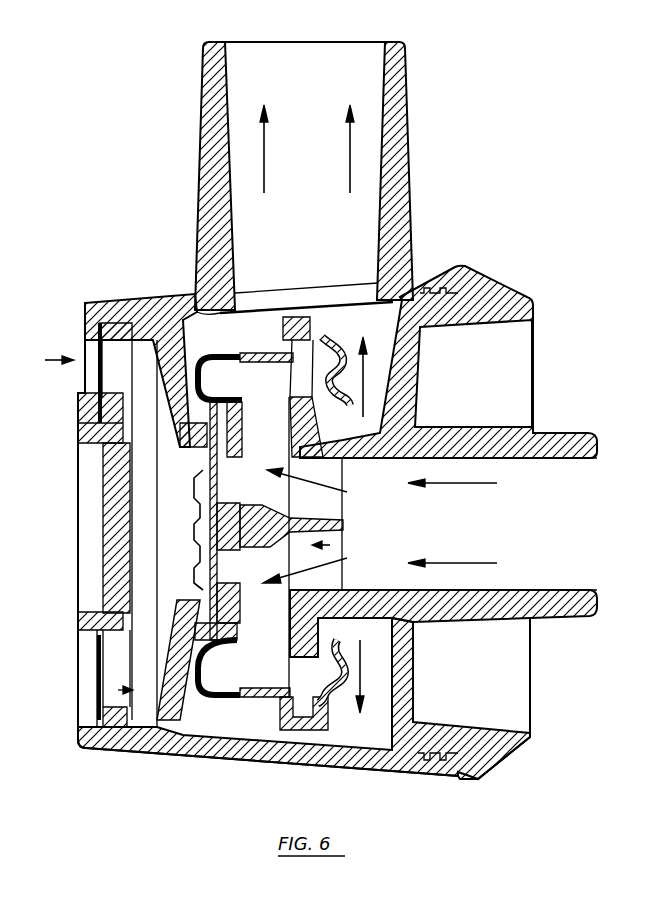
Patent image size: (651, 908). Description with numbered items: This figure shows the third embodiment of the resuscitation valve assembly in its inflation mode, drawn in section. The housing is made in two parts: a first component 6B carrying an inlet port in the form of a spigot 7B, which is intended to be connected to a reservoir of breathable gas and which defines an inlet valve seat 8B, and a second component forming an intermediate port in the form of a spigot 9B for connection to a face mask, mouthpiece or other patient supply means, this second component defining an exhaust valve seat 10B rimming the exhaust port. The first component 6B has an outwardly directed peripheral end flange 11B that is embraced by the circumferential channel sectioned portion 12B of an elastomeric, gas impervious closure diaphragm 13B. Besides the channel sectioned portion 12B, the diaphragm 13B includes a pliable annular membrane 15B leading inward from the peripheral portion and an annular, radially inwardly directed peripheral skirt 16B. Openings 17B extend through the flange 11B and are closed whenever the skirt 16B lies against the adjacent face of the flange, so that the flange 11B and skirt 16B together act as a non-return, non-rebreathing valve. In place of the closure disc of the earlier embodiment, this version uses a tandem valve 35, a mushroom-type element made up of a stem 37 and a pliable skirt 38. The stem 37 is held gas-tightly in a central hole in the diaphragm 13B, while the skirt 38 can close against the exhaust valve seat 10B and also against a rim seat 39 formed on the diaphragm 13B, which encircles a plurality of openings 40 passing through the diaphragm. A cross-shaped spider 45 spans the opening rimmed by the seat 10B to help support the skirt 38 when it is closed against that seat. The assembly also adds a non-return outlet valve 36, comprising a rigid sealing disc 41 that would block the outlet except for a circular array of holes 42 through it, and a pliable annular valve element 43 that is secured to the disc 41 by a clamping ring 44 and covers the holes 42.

The first component 6B is at (545, 364).
The spigot 7B is at (566, 498).
The inlet valve seat 8B is at (283, 393).
The spigot 9B is at (370, 124).
The exhaust valve seat 10B is at (200, 580).
The peripheral end flange 11B is at (305, 675).
The channel sectioned portion 12B is at (198, 295).
The closure diaphragm 13B is at (188, 460).
The annular membrane 15B is at (198, 708).
The peripheral skirt 16B is at (340, 702).
The openings 17B is at (283, 700).
The tandem valve 35 is at (330, 540).
The non-return outlet valve 36 is at (51, 353).
The stem 37 is at (300, 550).
The pliable skirt 38 is at (245, 480).
The rim seat 39 is at (288, 420).
The openings 40 is at (243, 588).
The sealing disc 41 is at (112, 533).
The holes 42 is at (120, 745).
The annular valve element 43 is at (98, 365).
The clamping ring 44 is at (84, 630).
The spider 45 is at (200, 476).